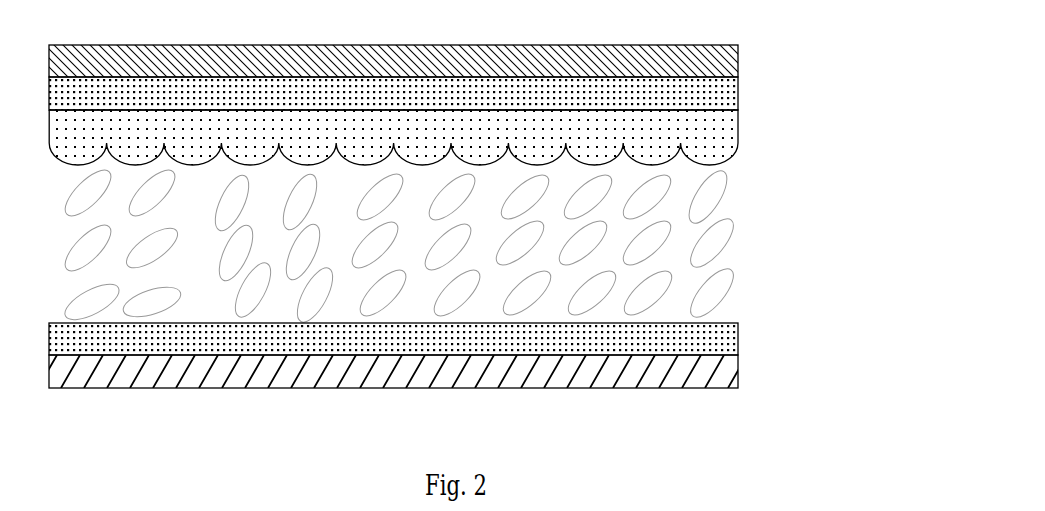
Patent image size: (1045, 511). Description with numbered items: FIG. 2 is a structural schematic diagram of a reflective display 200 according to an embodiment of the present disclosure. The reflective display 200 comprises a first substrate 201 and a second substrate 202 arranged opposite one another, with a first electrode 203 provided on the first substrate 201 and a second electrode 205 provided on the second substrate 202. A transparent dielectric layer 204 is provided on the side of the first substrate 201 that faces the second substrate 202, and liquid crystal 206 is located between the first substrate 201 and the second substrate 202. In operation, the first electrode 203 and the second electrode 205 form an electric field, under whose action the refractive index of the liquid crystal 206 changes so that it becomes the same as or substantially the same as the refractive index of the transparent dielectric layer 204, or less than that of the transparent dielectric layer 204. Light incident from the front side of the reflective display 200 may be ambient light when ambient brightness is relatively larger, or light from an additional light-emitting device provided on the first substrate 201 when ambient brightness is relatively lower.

The reflective display 200 is at (426, 226).
The first substrate 201 is at (720, 62).
The second substrate 202 is at (702, 370).
The first electrode 203 is at (705, 102).
The transparent dielectric layer 204 is at (705, 140).
The second electrode 205 is at (702, 330).
The liquid crystal 206 is at (712, 240).